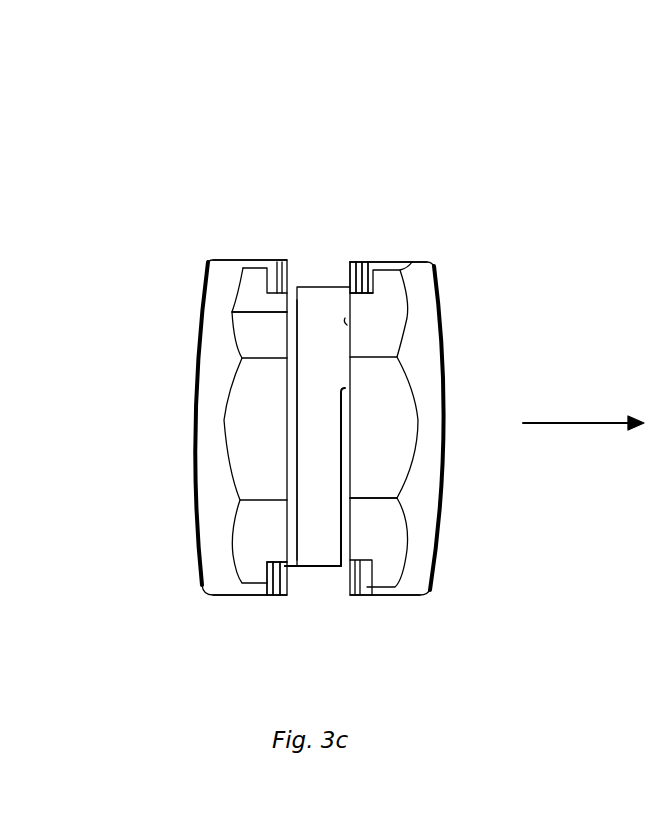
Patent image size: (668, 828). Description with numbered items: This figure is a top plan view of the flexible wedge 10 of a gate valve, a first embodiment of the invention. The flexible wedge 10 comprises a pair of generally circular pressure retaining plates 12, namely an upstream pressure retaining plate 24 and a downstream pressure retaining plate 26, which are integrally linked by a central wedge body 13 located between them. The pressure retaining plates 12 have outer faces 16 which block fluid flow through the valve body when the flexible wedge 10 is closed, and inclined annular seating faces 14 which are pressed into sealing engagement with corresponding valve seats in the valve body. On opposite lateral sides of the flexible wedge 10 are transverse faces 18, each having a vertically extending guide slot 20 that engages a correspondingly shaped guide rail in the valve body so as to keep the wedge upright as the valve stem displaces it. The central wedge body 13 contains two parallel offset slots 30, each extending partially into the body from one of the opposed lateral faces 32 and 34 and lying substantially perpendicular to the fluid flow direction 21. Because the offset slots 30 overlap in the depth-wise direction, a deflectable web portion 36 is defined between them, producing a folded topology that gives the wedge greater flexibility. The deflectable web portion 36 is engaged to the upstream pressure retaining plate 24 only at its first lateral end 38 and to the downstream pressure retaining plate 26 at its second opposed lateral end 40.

The flexible wedge 10 is at (465, 114).
The pressure retaining plates 12 is at (232, 250).
The central wedge body 13 is at (314, 276).
The annular seating faces 14 is at (193, 548).
The outer faces 16 is at (458, 371).
The transverse faces 18 is at (215, 595).
The guide slot 20 is at (352, 262).
The fluid flow direction 21 is at (565, 423).
The upstream pressure retaining plate 24 is at (217, 500).
The downstream pressure retaining plate 26 is at (418, 363).
The offset slots 30 is at (205, 313).
The lateral face 32 is at (308, 568).
The lateral face 34 is at (343, 264).
The deflectable web portion 36 is at (318, 427).
The first lateral end 38 is at (270, 567).
The second opposed lateral end 40 is at (347, 317).